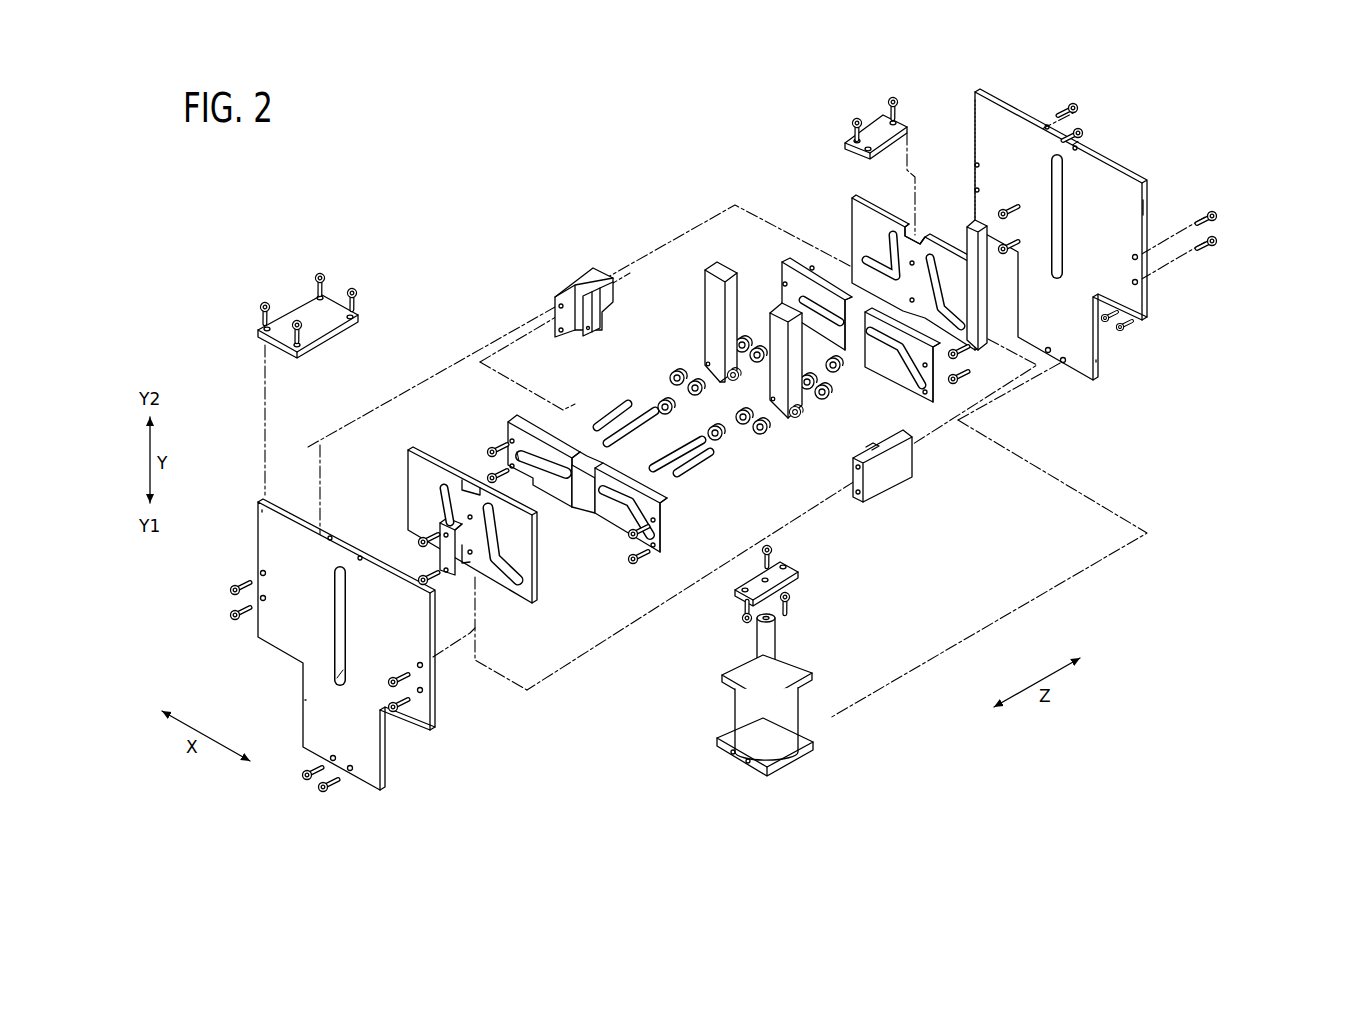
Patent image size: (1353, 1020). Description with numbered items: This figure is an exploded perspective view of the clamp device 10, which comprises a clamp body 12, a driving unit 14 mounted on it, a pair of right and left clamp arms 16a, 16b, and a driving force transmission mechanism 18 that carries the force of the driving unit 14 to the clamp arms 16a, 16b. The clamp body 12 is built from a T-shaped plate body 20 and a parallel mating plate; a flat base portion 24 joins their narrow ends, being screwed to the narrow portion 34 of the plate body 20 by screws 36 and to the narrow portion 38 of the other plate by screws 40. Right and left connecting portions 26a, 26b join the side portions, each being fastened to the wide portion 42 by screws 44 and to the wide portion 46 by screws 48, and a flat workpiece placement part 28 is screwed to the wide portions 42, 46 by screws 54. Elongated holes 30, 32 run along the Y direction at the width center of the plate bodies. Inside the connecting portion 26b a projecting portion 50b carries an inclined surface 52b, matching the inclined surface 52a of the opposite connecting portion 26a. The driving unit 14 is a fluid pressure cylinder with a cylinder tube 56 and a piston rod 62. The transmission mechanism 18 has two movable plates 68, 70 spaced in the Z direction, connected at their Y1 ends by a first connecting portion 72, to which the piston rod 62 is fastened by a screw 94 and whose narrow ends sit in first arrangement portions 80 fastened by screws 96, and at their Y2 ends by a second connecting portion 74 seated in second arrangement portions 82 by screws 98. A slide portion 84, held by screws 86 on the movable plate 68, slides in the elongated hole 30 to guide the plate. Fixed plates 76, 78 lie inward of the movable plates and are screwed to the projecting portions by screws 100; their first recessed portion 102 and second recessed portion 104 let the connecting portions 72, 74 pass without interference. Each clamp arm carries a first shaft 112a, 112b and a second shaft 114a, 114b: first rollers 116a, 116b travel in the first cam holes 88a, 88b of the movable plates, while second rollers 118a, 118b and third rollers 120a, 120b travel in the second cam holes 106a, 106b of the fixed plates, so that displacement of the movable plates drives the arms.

The clamp device 10 is at (519, 154).
The clamp body 12 is at (1094, 244).
The driving unit 14 is at (774, 701).
The clamp arm 16a is at (772, 313).
The clamp arm 16b is at (718, 265).
The driving force transmission mechanism 18 is at (892, 285).
The plate body 20 is at (306, 635).
The base portion 24 is at (800, 760).
The connecting portion 26a is at (898, 459).
The connecting portion 26b is at (580, 282).
The workpiece placement part 28 is at (307, 290).
The elongated hole 30 is at (338, 627).
The elongated hole 32 is at (1058, 210).
The narrow portion 34 is at (312, 705).
The screws 36 is at (320, 788).
The narrow portion 38 is at (1100, 368).
The screws 40 is at (1128, 323).
The wide portion 42 is at (270, 538).
The screws 44 is at (232, 590).
The wide portion 46 is at (1147, 207).
The screws 48 is at (1218, 240).
The projecting portion 50b is at (600, 306).
The inclined surface 52a is at (868, 446).
The inclined surface 52b is at (600, 285).
The screws 54 is at (320, 272).
The cylinder tube 56 is at (745, 710).
The piston rod 62 is at (776, 622).
The movable plate 68 is at (455, 521).
The movable plate 70 is at (860, 200).
The first connecting portion 72 is at (769, 582).
The second connecting portion 74 is at (852, 119).
The fixed plate 76 is at (510, 434).
The fixed plate 78 is at (797, 260).
The first arrangement portion 80 is at (468, 565).
The second arrangement portion 82 is at (468, 487).
The slide portion 84 is at (409, 521).
The screws 86 is at (421, 540).
The first cam hole 88a is at (505, 593).
The first cam hole 88b is at (440, 490).
The screw 94 is at (770, 545).
The screws 96 is at (742, 622).
The screws 98 is at (882, 130).
The screws 100 is at (490, 452).
The first recessed portion 102 is at (590, 503).
The second recessed portion 104 is at (615, 485).
The second cam hole 106a is at (615, 520).
The second cam hole 106b is at (548, 454).
The first shaft 112a is at (662, 478).
The first shaft 112b is at (648, 430).
The second shaft 114a is at (690, 470).
The second shaft 114b is at (612, 418).
The first roller 116a is at (722, 442).
The first roller 116b is at (660, 400).
The second roller 118a is at (765, 435).
The second roller 118b is at (693, 380).
The third roller 120a is at (752, 425).
The third roller 120b is at (676, 370).